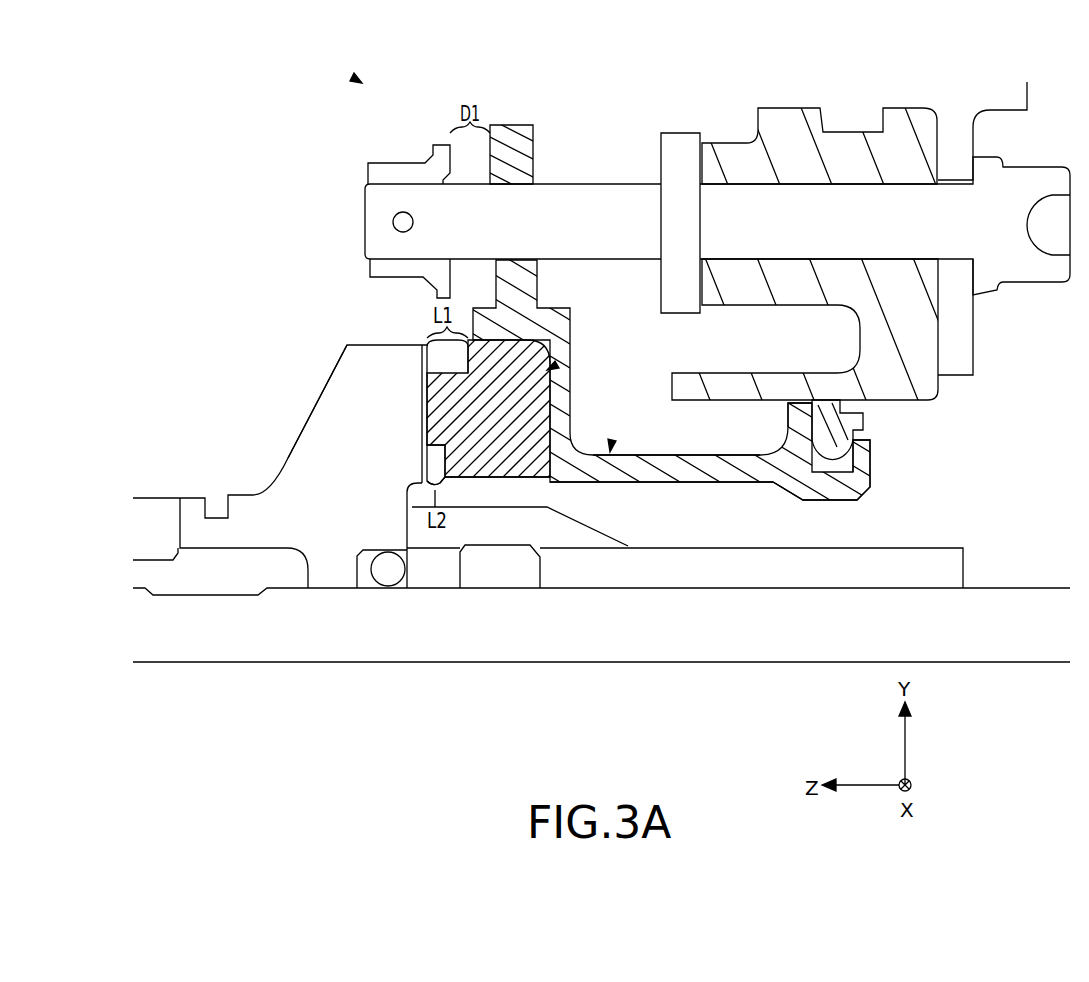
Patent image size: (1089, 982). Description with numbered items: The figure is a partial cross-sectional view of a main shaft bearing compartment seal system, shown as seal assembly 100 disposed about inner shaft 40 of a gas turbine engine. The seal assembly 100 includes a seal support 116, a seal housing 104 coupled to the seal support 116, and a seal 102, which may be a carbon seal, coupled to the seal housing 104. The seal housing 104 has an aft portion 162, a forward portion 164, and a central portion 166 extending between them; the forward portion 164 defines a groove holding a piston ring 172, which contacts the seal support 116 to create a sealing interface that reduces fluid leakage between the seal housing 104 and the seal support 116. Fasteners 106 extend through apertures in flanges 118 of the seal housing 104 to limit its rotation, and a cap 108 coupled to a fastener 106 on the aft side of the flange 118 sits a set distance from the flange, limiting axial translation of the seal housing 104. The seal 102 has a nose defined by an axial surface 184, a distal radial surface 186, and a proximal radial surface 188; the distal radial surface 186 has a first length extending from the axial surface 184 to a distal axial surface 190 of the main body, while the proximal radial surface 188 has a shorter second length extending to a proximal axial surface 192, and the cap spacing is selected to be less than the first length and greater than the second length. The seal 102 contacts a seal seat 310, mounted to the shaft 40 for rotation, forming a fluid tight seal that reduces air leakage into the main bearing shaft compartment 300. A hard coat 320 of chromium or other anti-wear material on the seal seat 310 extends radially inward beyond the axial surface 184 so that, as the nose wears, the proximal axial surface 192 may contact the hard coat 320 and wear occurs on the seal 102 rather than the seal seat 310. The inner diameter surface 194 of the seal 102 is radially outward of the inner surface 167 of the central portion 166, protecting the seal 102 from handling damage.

The seal assembly 100 is at (352, 78).
The seal 102 is at (555, 366).
The seal housing 104 is at (612, 445).
The fasteners 106 is at (618, 213).
The cap 108 is at (415, 177).
The seal support 116 is at (913, 132).
The flange 118 is at (515, 130).
The aft portion 162 is at (553, 327).
The forward portion 164 is at (870, 470).
The central portion 166 is at (690, 468).
The inner surface 167 is at (652, 483).
The piston ring 172 is at (833, 434).
The axial surface 184 is at (422, 395).
The distal radial surface 186 is at (447, 355).
The proximal radial surface 188 is at (427, 460).
The distal axial surface 190 is at (458, 375).
The proximal axial surface 192 is at (440, 472).
The inner diameter surface 194 is at (527, 480).
The main bearing shaft compartment 300 is at (241, 355).
The seal seat 310 is at (338, 440).
The hard coat 320 is at (422, 367).
The inner shaft 40 is at (502, 640).